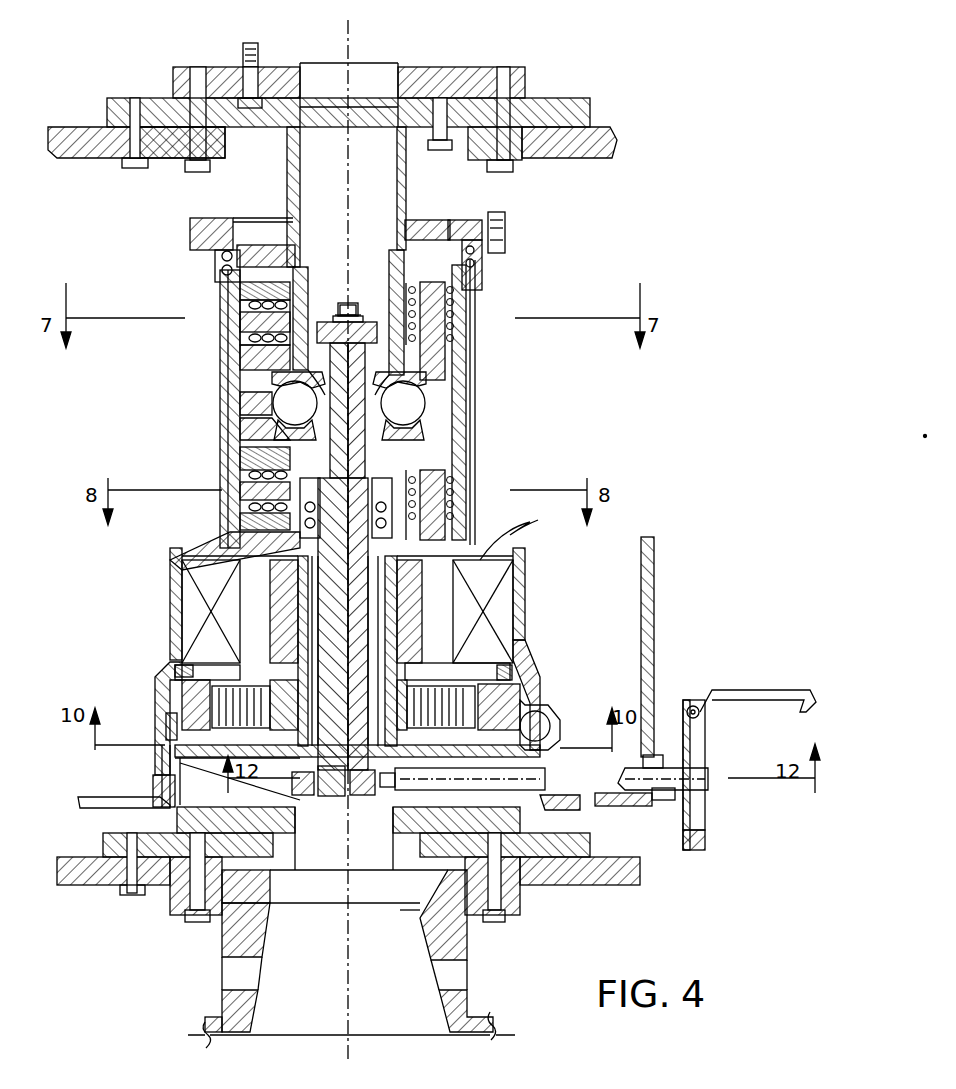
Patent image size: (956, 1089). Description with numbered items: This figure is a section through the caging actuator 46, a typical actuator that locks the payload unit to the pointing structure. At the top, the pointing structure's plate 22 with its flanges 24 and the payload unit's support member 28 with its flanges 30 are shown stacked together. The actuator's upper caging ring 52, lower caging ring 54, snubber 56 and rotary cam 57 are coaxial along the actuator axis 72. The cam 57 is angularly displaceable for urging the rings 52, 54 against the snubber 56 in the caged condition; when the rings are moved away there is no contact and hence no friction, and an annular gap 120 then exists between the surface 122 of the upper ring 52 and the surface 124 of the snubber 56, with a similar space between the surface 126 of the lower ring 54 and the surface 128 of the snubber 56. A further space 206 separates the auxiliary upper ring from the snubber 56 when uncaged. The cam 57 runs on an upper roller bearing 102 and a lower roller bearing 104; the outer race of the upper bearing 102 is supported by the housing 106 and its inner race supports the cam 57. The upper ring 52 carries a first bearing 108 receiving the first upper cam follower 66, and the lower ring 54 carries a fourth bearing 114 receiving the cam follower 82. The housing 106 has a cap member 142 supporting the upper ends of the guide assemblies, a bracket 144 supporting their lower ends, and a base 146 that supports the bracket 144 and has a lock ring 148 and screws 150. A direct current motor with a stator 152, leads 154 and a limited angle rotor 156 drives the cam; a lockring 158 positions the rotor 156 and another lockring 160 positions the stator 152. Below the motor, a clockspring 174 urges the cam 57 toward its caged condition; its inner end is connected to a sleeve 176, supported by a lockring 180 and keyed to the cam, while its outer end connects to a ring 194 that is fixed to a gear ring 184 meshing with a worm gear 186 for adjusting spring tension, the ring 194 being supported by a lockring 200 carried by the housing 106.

The plate 22 is at (108, 885).
The flanges 24 is at (240, 950).
The support member 28 is at (607, 133).
The flanges 30 is at (445, 72).
The caging actuator 46 is at (640, 50).
The upper caging ring 52 is at (225, 348).
The lower caging ring 54 is at (240, 459).
The snubber 56 is at (270, 400).
The rotary cam 57 is at (462, 440).
The first upper cam follower 66 is at (225, 318).
The actuator axis 72 is at (352, 88).
The cam follower 82 is at (225, 515).
The upper roller bearing 102 is at (480, 270).
The lower roller bearing 104 is at (255, 560).
The housing 106 is at (155, 762).
The first bearing 108 is at (245, 292).
The fourth bearing 114 is at (200, 548).
The annular gap 120 is at (432, 368).
The surface 122 is at (312, 320).
The surface 124 is at (240, 365).
The surface 126 is at (245, 432).
The surface 128 is at (240, 410).
The cap member 142 is at (228, 235).
The bracket 144 is at (472, 470).
The base 146 is at (212, 756).
The lock ring 148 is at (330, 795).
The screws 150 is at (155, 812).
The stator 152 is at (500, 580).
The leads 154 is at (510, 545).
The limited angle rotor 156 is at (415, 612).
The lockring 158 is at (410, 672).
The lockring 160 is at (537, 677).
The clockspring 174 is at (238, 695).
The sleeve 176 is at (418, 720).
The lockring 180 is at (398, 700).
The gear ring 184 is at (600, 757).
The worm gear 186 is at (545, 712).
The ring 194 is at (165, 688).
The lockring 200 is at (166, 715).
The space 206 is at (365, 310).